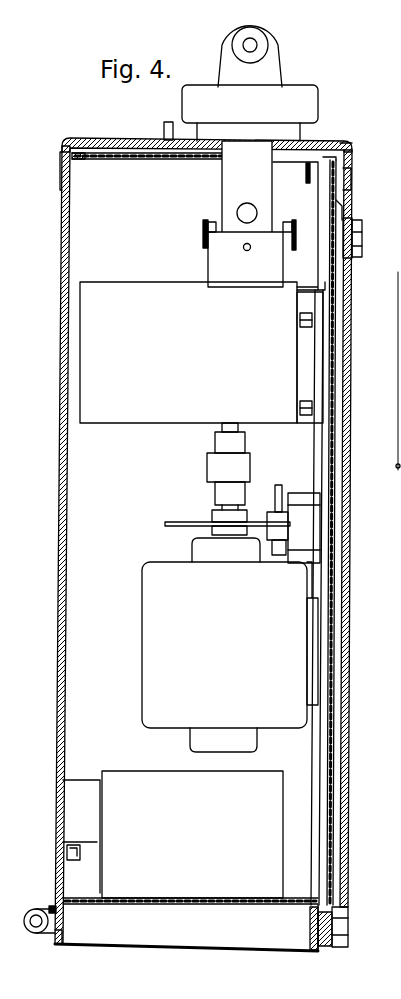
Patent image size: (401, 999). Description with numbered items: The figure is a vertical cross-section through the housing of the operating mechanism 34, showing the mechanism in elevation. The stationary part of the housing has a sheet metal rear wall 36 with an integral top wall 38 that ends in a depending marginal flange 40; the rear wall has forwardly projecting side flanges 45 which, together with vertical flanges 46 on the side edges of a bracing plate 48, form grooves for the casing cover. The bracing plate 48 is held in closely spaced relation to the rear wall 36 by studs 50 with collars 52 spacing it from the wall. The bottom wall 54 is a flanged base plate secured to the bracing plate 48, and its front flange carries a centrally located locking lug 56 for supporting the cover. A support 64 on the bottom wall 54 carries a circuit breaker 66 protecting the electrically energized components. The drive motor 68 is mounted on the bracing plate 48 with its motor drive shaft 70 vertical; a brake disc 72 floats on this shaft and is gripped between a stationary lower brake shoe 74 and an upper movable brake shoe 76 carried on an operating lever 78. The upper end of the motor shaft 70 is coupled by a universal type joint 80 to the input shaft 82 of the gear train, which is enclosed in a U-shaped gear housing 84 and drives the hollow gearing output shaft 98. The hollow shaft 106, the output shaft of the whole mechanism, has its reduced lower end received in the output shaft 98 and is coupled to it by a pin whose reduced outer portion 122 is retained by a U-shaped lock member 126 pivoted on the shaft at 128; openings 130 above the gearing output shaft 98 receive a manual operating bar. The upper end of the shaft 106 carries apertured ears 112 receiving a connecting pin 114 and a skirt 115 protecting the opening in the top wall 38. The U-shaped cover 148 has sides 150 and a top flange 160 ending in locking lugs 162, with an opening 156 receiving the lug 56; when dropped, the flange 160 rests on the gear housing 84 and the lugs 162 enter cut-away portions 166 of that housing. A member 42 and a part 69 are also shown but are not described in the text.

The operating mechanism 34 is at (50, 526).
The rear wall 36 is at (343, 728).
The top wall 38 is at (115, 134).
The depending marginal flange 40 is at (62, 152).
The eye 42 is at (38, 912).
The side flanges 45 is at (343, 180).
The vertical flanges 46 is at (330, 150).
The bracing plate 48 is at (336, 210).
The studs 50 is at (360, 238).
The collars 52 is at (352, 253).
The bottom wall 54 is at (140, 902).
The locking lug 56 is at (45, 934).
The support 64 is at (135, 776).
The circuit breaker 66 is at (85, 779).
The drive motor 68 is at (148, 640).
The rail 69 is at (318, 667).
The motor drive shaft 70 is at (212, 514).
The brake disc 72 is at (165, 523).
The lower brake shoe 74 is at (288, 540).
The upper movable brake shoe 76 is at (290, 517).
The operating lever 78 is at (278, 485).
The universal type joint 80 is at (207, 463).
The input shaft 82 is at (220, 428).
The gear housing 84 is at (122, 292).
The output shaft 98 is at (212, 255).
The hollow shaft 106 is at (222, 170).
The apertured ears 112 is at (276, 40).
The connecting pin 114 is at (244, 42).
The skirt 115 is at (310, 100).
The outer portion of reduced cross-section 122 is at (248, 251).
The lock member 126 is at (203, 226).
The pivot mounting of lock member 128 is at (203, 240).
The openings 130 is at (258, 200).
The cover 148 is at (58, 640).
The side of cover 150 is at (137, 172).
The opening 156 is at (52, 907).
The flange 160 is at (80, 160).
The locking lugs 162 is at (306, 180).
The cut-away portions 166 is at (308, 287).